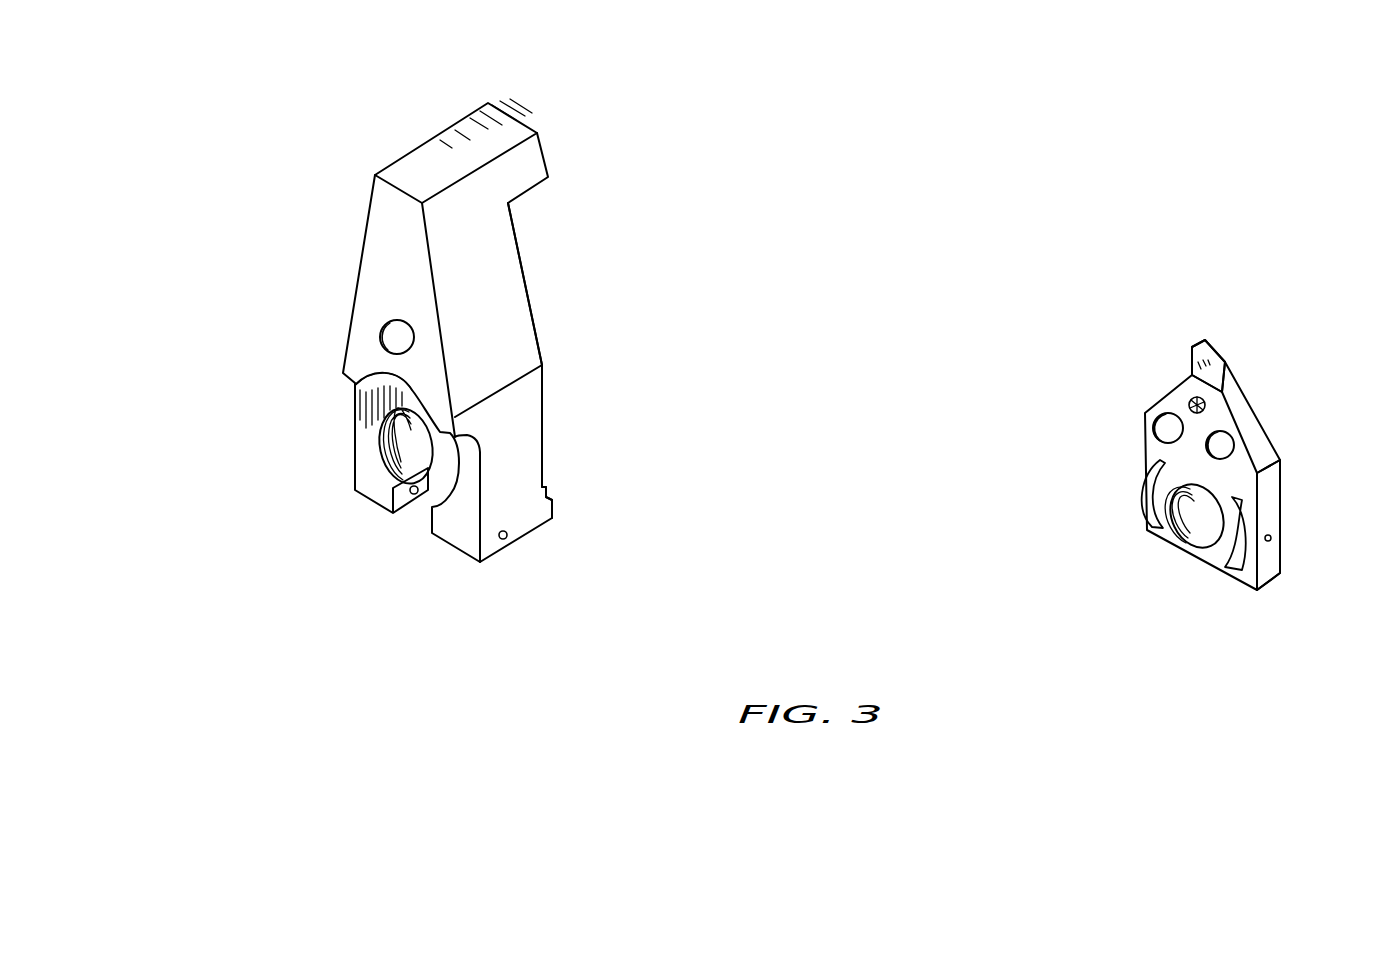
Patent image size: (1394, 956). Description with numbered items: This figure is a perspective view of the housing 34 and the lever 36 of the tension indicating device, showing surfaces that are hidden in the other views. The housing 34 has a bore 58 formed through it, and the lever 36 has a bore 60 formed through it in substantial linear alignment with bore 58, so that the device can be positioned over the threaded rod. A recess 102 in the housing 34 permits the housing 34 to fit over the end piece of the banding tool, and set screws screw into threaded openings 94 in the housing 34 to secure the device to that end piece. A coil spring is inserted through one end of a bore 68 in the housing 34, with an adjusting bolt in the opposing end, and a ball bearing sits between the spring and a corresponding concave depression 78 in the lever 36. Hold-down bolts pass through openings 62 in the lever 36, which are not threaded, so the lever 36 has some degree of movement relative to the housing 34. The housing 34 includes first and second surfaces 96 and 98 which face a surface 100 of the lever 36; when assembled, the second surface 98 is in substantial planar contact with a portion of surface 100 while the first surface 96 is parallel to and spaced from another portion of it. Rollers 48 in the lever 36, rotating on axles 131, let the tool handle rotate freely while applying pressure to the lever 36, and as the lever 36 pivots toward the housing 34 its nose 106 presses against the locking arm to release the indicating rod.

The housing 34 is at (505, 128).
The first surface 96 is at (525, 267).
The bore 68 is at (380, 332).
The recess 102 is at (368, 396).
The bore 58 is at (437, 452).
The second surface 98 is at (555, 502).
The threaded openings 94 is at (414, 494).
The lever 36 is at (1268, 517).
The nose 106 is at (1217, 350).
The surface 100 is at (1247, 478).
The concave depression 78 is at (1197, 400).
The openings 62 is at (1160, 435).
The bore 60 is at (1212, 510).
The rollers 48 is at (1140, 488).
The axles 131 is at (1275, 537).